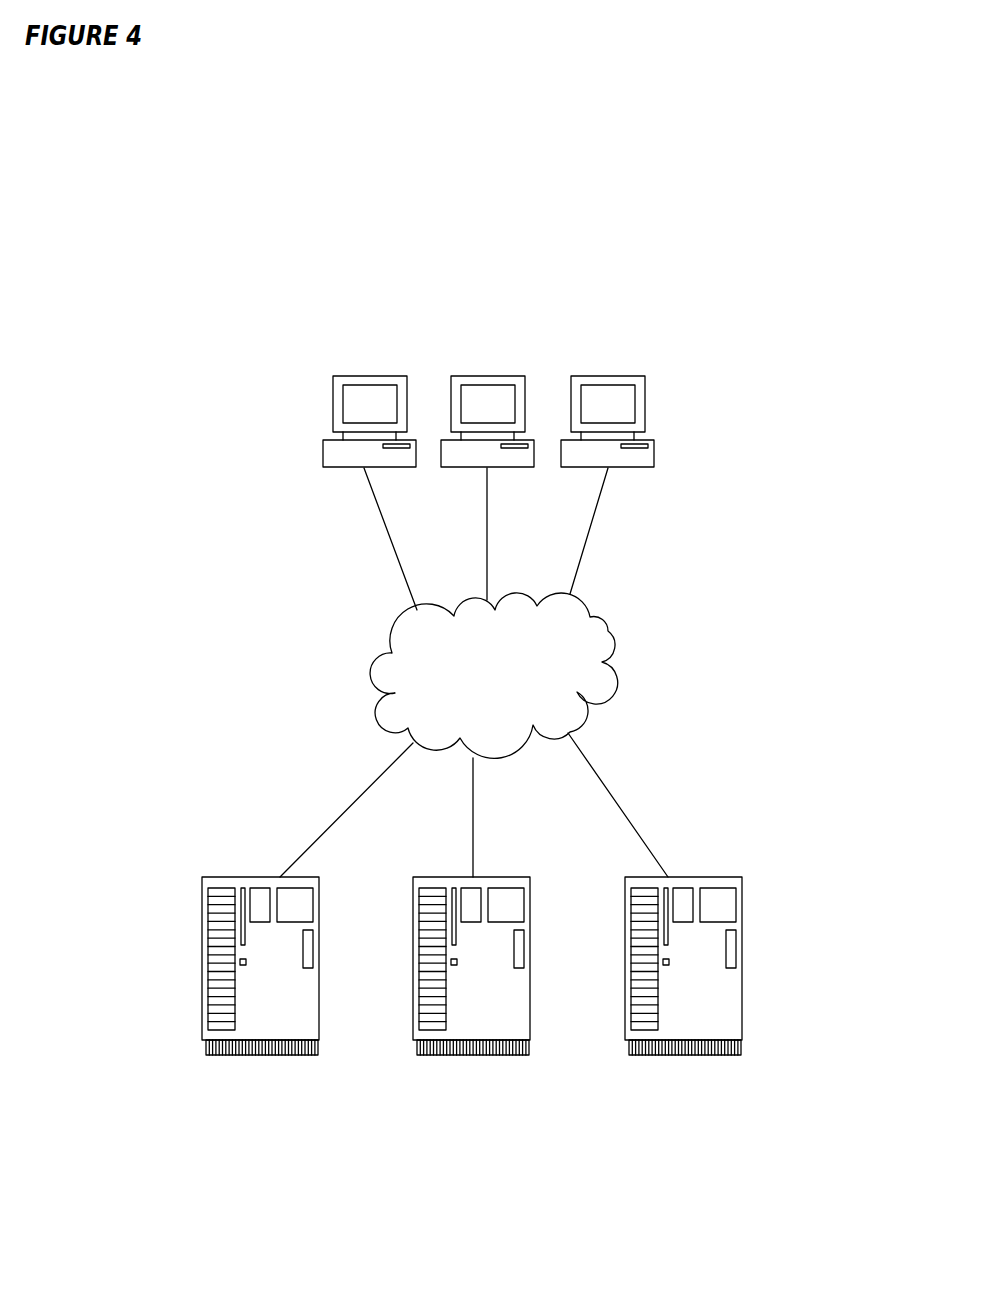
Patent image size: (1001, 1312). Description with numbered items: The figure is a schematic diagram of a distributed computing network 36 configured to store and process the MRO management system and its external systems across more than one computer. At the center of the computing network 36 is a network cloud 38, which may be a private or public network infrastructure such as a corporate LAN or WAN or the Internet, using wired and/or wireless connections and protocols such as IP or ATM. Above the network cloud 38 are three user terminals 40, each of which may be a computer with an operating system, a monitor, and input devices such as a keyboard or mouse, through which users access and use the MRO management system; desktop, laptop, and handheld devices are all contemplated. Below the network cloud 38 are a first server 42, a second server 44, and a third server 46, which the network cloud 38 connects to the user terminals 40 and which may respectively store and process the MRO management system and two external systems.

The distributed computing network 36 is at (545, 289).
The network cloud 38 is at (608, 630).
The user terminals 40 is at (608, 375).
The first server 42 is at (248, 1055).
The second server 44 is at (473, 1055).
The third server 46 is at (742, 876).